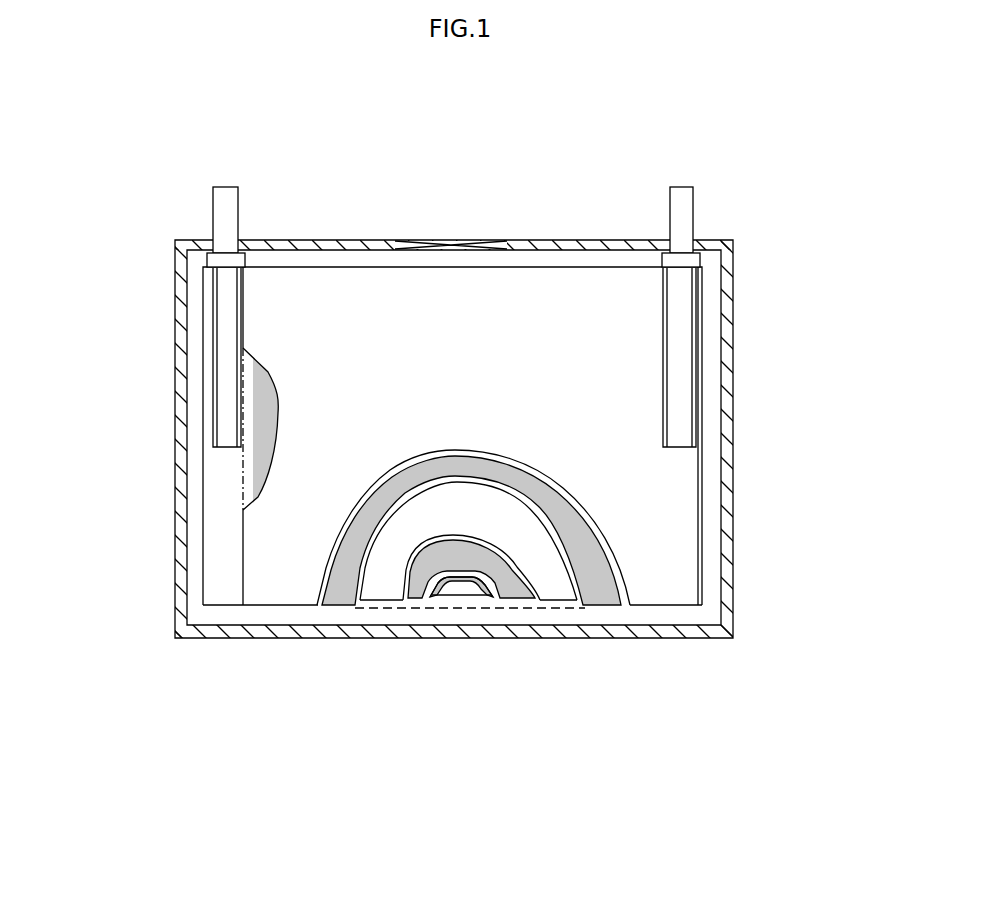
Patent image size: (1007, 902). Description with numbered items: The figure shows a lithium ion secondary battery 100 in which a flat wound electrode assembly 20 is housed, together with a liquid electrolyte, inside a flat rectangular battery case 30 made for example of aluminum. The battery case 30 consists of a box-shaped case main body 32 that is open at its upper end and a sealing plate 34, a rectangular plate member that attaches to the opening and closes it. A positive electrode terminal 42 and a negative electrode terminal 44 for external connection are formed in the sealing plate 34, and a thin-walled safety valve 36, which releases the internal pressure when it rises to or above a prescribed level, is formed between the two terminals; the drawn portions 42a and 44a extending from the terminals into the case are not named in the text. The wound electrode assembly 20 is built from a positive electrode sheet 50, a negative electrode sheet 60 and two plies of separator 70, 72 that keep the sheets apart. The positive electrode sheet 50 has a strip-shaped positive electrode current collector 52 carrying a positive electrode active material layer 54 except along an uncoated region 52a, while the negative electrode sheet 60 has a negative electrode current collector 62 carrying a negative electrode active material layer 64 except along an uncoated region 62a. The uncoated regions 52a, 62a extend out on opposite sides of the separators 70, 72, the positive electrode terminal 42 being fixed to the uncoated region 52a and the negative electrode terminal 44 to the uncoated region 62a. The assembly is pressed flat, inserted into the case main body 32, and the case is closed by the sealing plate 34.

The lithium ion secondary battery 100 is at (736, 201).
The wound electrode assembly 20 is at (340, 296).
The battery case 30 is at (738, 350).
The case main body 32 is at (735, 619).
The sealing plate 34 is at (630, 238).
The safety valve 36 is at (455, 245).
The positive electrode terminal 42 is at (225, 192).
The negative electrode internal terminal 42a is at (228, 399).
The negative electrode terminal 44 is at (681, 194).
The positive electrode internal terminal 44a is at (690, 408).
The positive electrode sheet 50 is at (340, 592).
The positive electrode current collector 52 is at (143, 443).
The uncoated region 52a is at (222, 580).
The positive electrode active material layer 54 is at (265, 402).
The negative electrode sheet 60 is at (447, 663).
The negative electrode current collector 62 is at (780, 436).
The uncoated region 62a is at (693, 507).
The negative electrode active material layer 64 is at (418, 588).
The separator 70 is at (390, 590).
The separator 72 is at (280, 538).